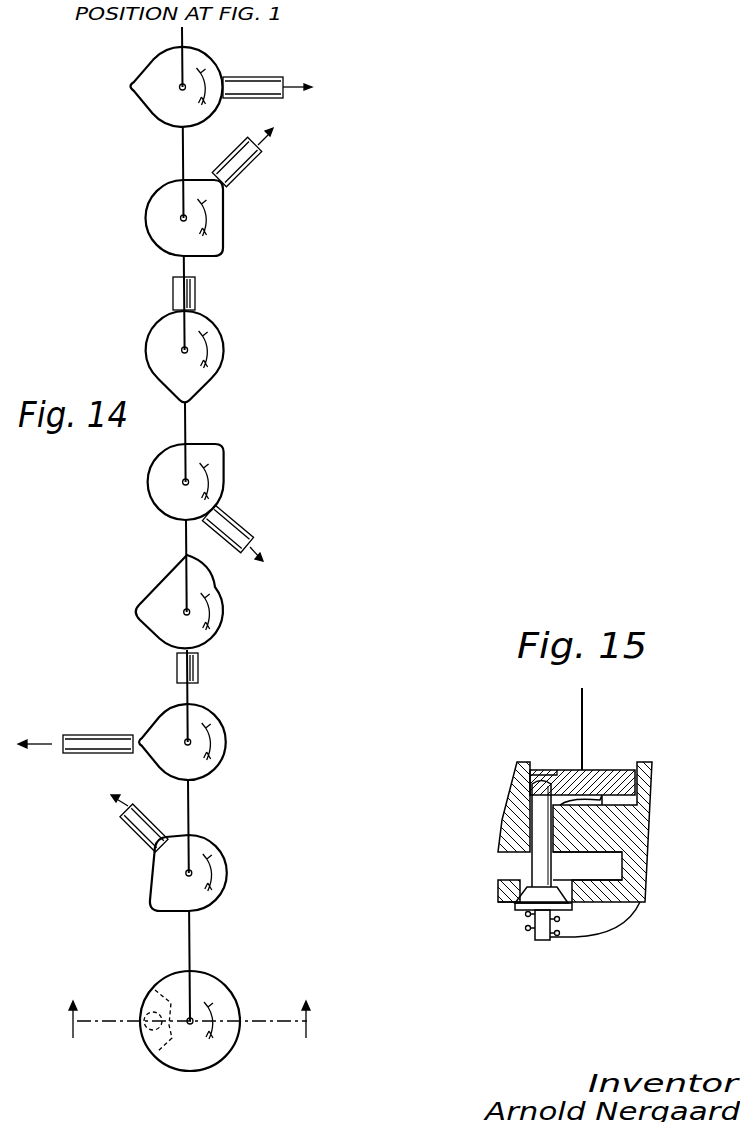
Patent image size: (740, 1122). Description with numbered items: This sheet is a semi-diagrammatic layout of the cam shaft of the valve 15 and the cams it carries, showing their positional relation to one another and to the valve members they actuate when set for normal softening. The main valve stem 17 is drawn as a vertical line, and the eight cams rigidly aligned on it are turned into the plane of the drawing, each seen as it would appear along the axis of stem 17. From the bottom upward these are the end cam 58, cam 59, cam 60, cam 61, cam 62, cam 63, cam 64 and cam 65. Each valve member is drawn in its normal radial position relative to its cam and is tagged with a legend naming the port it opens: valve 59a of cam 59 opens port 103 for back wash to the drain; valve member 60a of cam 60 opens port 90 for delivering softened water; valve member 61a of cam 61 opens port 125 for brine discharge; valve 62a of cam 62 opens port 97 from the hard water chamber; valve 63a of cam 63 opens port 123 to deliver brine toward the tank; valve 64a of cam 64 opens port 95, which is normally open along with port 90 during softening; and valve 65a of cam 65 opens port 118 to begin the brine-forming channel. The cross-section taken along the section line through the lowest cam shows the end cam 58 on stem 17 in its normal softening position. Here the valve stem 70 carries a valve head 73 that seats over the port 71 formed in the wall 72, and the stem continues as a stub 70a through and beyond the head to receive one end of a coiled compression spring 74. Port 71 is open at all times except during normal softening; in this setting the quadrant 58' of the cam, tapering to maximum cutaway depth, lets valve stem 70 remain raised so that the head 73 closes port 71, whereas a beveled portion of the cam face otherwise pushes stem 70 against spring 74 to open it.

In FIG. 14, the main valve stem 17 is at (185, 42).
In FIG. 15, the main valve stem 17 is at (584, 718).
In FIG. 14, the end cam 58 is at (205, 1021).
In FIG. 15, the end cam 58 is at (580, 765).
In FIG. 14, the quadrant of cam 58 58' is at (139, 1013).
In FIG. 15, the quadrant of cam 58 58' is at (547, 750).
In FIG. 14, the cam 59 is at (229, 868).
In FIG. 14, the valve 59a is at (152, 821).
In FIG. 14, the cam 60 is at (227, 741).
In FIG. 14, the valve member 60a is at (100, 741).
In FIG. 14, the cam 61 is at (148, 590).
In FIG. 14, the valve member 61a is at (177, 663).
In FIG. 14, the cam 62 is at (149, 493).
In FIG. 14, the valve 62a is at (227, 516).
In FIG. 14, the cam 63 is at (223, 350).
In FIG. 14, the valve 63a is at (172, 292).
In FIG. 14, the cam 64 is at (147, 214).
In FIG. 14, the valve 64a is at (246, 172).
In FIG. 14, the cam 65 is at (145, 92).
In FIG. 14, the valve 65a is at (251, 85).
In FIG. 14, the valve stem 70 is at (144, 1026).
In FIG. 15, the valve stem 70 is at (535, 813).
In FIG. 15, the stub 70a is at (533, 938).
In FIG. 15, the port 71 is at (525, 882).
In FIG. 15, the wall 72 is at (500, 892).
In FIG. 15, the valve head 73 is at (518, 906).
In FIG. 15, the coiled compression spring 74 is at (561, 920).
In FIG. 14, the port 90 is at (38, 752).
In FIG. 14, the port 95 is at (316, 140).
In FIG. 14, the port 97 is at (253, 530).
In FIG. 14, the port 103 is at (128, 822).
In FIG. 14, the port 118 is at (353, 90).
In FIG. 14, the port 123 is at (197, 289).
In FIG. 14, the port 125 is at (200, 668).
In FIG. 14, the valve 15 is at (193, 1019).